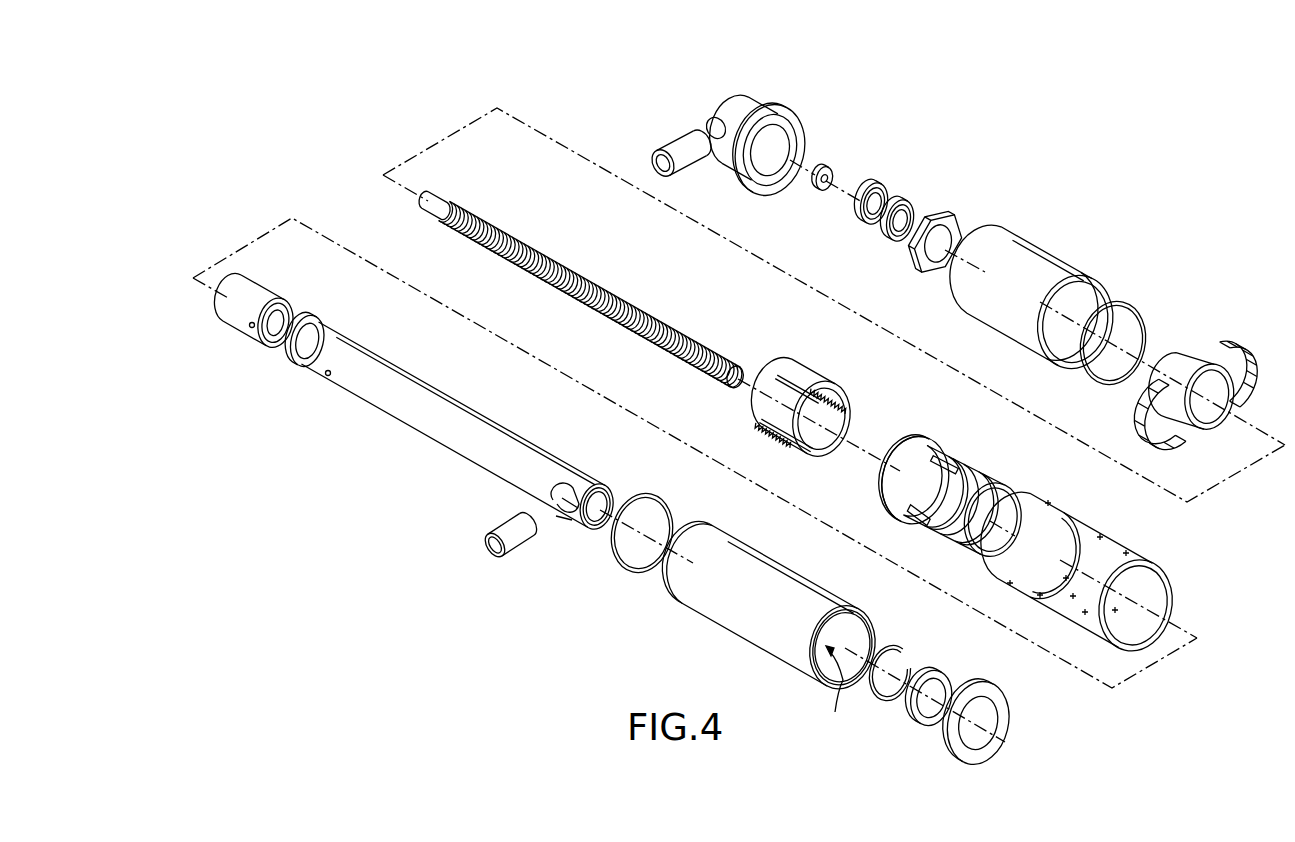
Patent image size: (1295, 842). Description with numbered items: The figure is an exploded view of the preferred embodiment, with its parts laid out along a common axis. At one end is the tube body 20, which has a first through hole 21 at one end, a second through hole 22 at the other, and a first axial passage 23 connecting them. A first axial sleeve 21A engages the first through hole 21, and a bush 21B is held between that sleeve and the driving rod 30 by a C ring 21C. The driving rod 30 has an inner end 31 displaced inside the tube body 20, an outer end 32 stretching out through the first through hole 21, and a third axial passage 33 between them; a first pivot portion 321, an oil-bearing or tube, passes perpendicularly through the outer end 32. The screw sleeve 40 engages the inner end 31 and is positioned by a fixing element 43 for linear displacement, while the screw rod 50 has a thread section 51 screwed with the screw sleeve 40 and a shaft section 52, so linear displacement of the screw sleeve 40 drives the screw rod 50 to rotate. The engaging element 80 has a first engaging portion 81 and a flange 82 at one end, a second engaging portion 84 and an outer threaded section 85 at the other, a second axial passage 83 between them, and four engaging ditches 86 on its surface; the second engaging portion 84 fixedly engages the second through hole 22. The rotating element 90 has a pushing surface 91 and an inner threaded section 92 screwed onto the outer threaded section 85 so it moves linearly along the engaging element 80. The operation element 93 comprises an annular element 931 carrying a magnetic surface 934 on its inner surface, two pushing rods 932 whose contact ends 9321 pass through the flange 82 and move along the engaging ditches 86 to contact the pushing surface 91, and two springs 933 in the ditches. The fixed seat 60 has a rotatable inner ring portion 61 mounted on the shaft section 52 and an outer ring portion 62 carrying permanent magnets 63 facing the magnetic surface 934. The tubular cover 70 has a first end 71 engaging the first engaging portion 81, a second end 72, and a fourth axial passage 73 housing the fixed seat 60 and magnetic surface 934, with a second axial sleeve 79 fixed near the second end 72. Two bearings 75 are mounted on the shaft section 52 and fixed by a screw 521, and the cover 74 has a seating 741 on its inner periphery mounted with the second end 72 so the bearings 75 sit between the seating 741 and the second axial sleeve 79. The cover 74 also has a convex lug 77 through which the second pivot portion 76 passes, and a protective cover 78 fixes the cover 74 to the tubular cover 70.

The tube body 20 is at (773, 619).
The first through hole 21 is at (850, 632).
The first axial sleeve 21A is at (990, 697).
The bush 21B is at (940, 672).
The C ring 21C is at (905, 650).
The second through hole 22 is at (675, 530).
The first axial passage 23 is at (835, 690).
The driving rod 30 is at (462, 431).
The inner end 31 is at (328, 377).
The outer end 32 is at (585, 485).
The third axial passage 33 is at (600, 494).
The first pivot portion 321 is at (527, 528).
The screw sleeve 40 is at (278, 290).
The fixing element 43 is at (315, 320).
The screw rod 50 is at (583, 273).
The thread section 51 is at (594, 296).
The shaft section 52 is at (441, 205).
The screw 521 is at (822, 186).
The fixed seat 60 is at (1179, 377).
The inner ring portion 61 is at (1205, 412).
The outer ring portion 62 is at (1195, 370).
The permanent magnets 63 is at (1140, 414).
The tubular cover 70 is at (1038, 291).
The first end 71 is at (1082, 300).
The second end 72 is at (985, 262).
The fourth axial passage 73 is at (1110, 325).
The cover 74 is at (778, 133).
The seating 741 is at (790, 148).
The bearings 75 is at (900, 200).
The second pivot portion 76 is at (688, 162).
The convex lug 77 is at (728, 115).
The protective cover 78 is at (775, 100).
The second axial sleeve 79 is at (940, 220).
The engaging element 80 is at (953, 478).
The first engaging portion 81 is at (905, 440).
The flange 82 is at (915, 448).
The second axial passage 83 is at (882, 492).
The second engaging portion 84 is at (1000, 495).
The outer threaded section 85 is at (985, 475).
The engaging ditches 86 is at (935, 455).
The rotating element 90 is at (1085, 574).
The pushing surface 91 is at (1065, 520).
The inner threaded section 92 is at (1080, 535).
The operation element 93 is at (818, 400).
The annular element 931 is at (812, 382).
The pushing rod 932 is at (814, 396).
The contact end 9321 is at (860, 420).
The springs 933 is at (880, 430).
The magnetic surface 934 is at (800, 455).